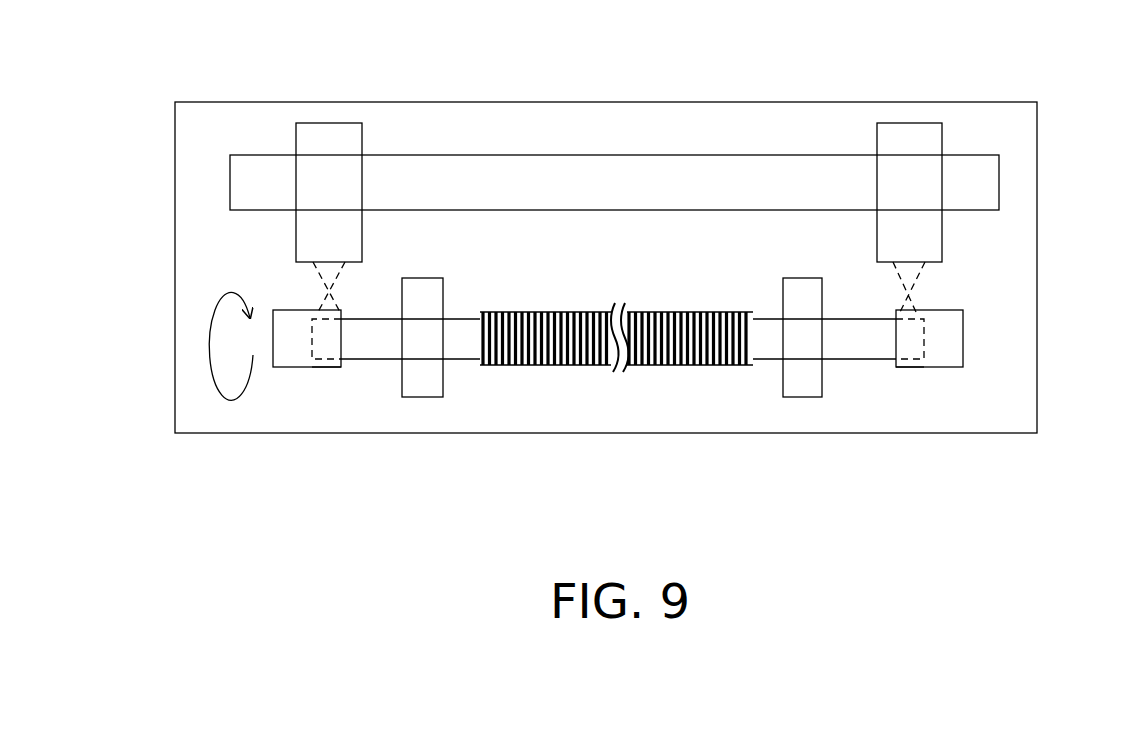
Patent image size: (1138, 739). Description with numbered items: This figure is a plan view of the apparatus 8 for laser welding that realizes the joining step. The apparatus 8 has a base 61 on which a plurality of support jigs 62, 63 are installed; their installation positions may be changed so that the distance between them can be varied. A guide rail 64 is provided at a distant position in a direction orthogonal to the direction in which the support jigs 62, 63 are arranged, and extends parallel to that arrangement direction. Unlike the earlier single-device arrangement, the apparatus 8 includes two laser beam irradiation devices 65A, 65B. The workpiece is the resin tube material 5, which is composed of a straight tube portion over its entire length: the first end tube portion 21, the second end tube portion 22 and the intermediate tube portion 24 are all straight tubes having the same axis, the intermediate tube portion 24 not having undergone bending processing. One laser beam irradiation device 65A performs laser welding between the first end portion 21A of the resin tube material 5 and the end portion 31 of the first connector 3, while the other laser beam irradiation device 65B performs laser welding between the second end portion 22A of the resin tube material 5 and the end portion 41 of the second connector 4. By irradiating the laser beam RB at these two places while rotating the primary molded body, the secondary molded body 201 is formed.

The apparatus for laser welding 8 is at (950, 82).
The base 61 is at (762, 102).
The guide rail 64 is at (572, 155).
The laser beam irradiation device 65A is at (322, 123).
The laser beam irradiation device 65B is at (915, 123).
The laser beam RB is at (340, 286).
The support jig 62 is at (423, 397).
The support jig 63 is at (802, 397).
The secondary molded body 201 is at (963, 302).
The first connector 3 is at (280, 367).
The end portion of the first connector 31 is at (319, 367).
The first end portion 21A is at (328, 350).
The first end tube portion 21 is at (460, 360).
The second end tube portion 22 is at (770, 360).
The second end portion 22A is at (907, 360).
The intermediate tube portion 24 is at (560, 365).
The resin tube material 5 is at (616, 410).
The second connector 4 is at (953, 368).
The end portion of the second connector 41 is at (912, 368).